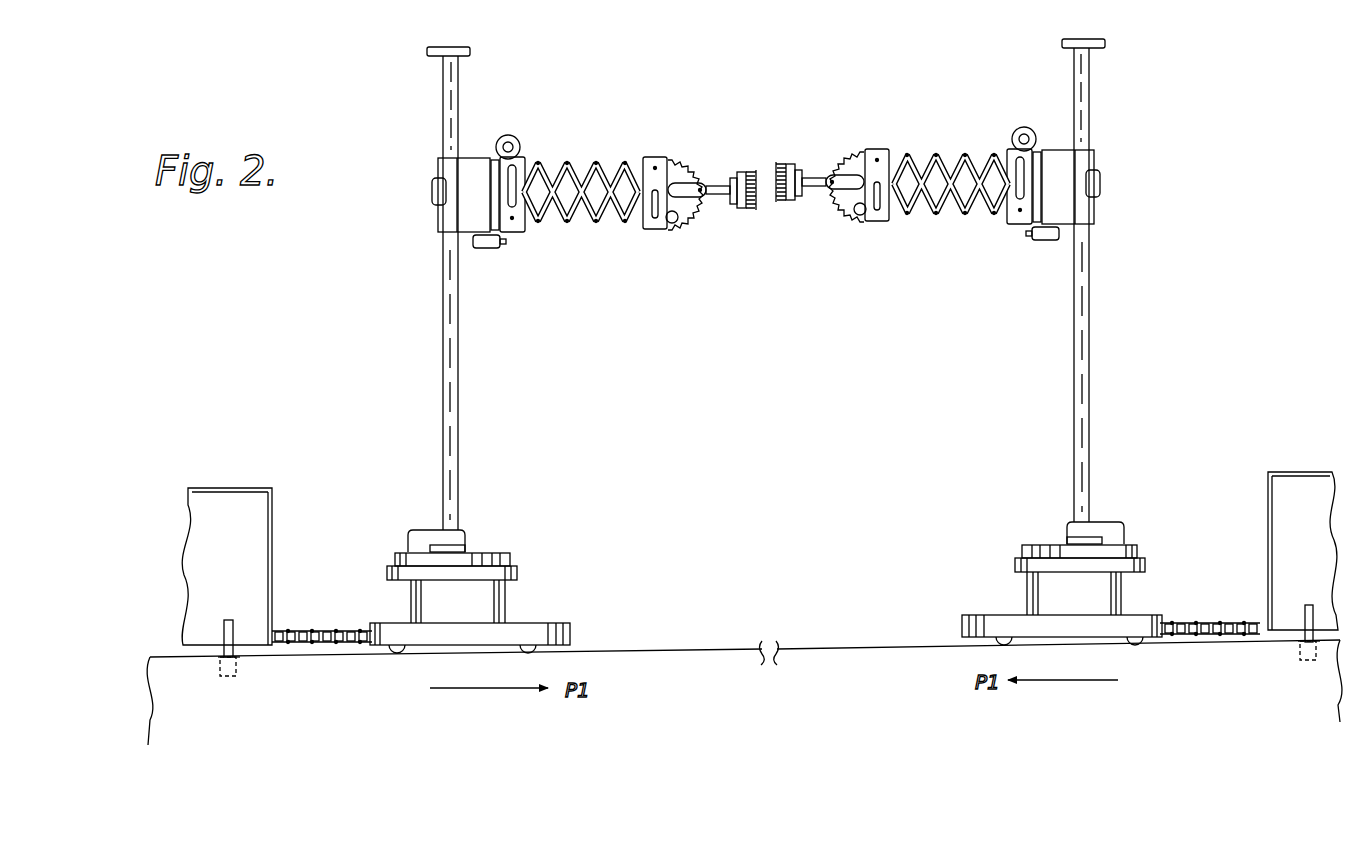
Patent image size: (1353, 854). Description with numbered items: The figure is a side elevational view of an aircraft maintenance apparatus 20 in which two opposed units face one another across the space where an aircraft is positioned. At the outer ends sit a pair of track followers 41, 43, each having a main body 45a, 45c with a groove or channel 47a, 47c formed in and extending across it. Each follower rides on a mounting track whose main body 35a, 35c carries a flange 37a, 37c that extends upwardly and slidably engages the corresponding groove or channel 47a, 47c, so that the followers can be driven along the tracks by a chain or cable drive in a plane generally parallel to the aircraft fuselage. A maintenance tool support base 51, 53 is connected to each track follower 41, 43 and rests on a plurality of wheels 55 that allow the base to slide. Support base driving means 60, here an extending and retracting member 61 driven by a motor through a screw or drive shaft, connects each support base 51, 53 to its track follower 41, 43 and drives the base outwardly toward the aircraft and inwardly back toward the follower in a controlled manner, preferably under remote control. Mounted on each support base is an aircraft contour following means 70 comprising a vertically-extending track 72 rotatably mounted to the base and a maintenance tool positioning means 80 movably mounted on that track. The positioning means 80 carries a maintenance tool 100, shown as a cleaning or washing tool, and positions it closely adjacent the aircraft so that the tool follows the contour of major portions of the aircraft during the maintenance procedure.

The aircraft maintenance apparatus 20 is at (345, 283).
The track follower 41 is at (215, 488).
The track follower 43 is at (1288, 472).
The main body 45a is at (248, 535).
The main body 45c is at (1325, 513).
The groove or channel 47a is at (228, 620).
The groove or channel 47c is at (1306, 605).
The flange 37a is at (235, 657).
The flange 37c is at (1290, 642).
The main body 35a is at (225, 672).
The main body 35c is at (1300, 658).
The maintenance tool support base 51 is at (525, 620).
The maintenance tool support base 53 is at (985, 617).
The wheels 55 is at (560, 646).
The support base driving means 60 is at (1232, 580).
The extending and retracting member 61 is at (340, 646).
The aircraft contour following means 70 is at (522, 386).
The vertically-extending track 72 is at (465, 357).
The maintenance tool positioning means 80 is at (614, 256).
The maintenance tool 100 is at (745, 168).